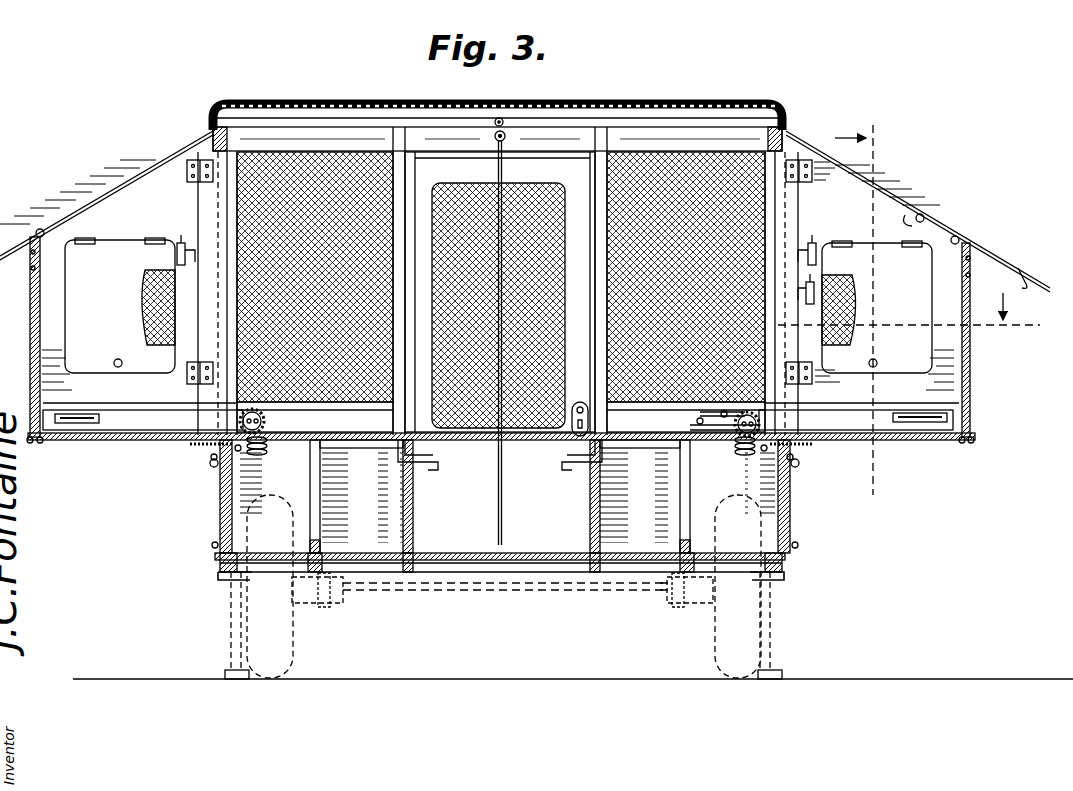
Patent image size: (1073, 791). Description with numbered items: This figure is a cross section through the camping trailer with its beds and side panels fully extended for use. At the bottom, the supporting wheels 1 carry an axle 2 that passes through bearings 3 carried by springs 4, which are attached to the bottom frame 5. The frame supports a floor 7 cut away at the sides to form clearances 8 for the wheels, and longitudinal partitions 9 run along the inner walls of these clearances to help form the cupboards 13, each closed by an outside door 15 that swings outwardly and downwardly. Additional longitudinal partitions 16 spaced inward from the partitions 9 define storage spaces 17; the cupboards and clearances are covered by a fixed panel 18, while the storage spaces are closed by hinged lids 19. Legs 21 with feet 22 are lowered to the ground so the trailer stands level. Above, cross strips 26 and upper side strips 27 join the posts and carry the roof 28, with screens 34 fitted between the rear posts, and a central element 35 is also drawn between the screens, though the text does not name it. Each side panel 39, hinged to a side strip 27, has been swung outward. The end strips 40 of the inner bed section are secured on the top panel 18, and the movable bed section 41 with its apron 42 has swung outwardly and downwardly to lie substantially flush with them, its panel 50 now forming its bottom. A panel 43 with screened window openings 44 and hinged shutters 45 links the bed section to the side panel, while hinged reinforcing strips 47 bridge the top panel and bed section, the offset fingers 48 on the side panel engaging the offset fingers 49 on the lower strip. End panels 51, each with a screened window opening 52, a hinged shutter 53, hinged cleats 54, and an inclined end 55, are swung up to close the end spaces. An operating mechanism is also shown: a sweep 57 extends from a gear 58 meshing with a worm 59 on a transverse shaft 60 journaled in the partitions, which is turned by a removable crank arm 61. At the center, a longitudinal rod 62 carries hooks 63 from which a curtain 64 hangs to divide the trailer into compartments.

The supporting wheels 1 is at (300, 641).
The axle 2 is at (422, 590).
The bearings 3 is at (692, 603).
The springs 4 is at (668, 585).
The bottom frame 5 is at (598, 570).
The floor 7 is at (512, 560).
The clearances 8 is at (858, 312).
The longitudinal partitions 9 is at (312, 504).
The cupboard 13 is at (268, 496).
The outside door 15 is at (220, 513).
The additional longitudinal partitions 16 is at (414, 518).
The storage spaces 17 is at (660, 478).
The panel 18 is at (716, 428).
The hinged lids 19 is at (660, 432).
The legs 21 is at (229, 637).
The feet 22 is at (228, 577).
The cross strips 26 is at (298, 131).
The upper side strips 27 is at (212, 131).
The roof 28 is at (665, 108).
The screens 34 is at (245, 224).
The door 35 is at (548, 432).
The side panel 39 is at (525, 211).
The end strips of bed section 40 is at (501, 417).
The movable bed section 41 is at (138, 410).
The apron 42 is at (42, 372).
The panel 43 is at (30, 356).
The screened window openings 44 is at (30, 318).
The hinged shutters 45 is at (962, 312).
The reinforcing strips 47 is at (206, 462).
The offset fingers 48 is at (1024, 287).
The offset fingers 49 is at (200, 447).
The panel 50 is at (125, 435).
The end panels 51 is at (884, 202).
The screened window opening 52 is at (816, 295).
The hinged shutter 53 is at (845, 252).
The cleats 54 is at (806, 194).
The inclined end 55 is at (926, 222).
The sweep 57 is at (150, 440).
The gear 58 is at (268, 420).
The worm 59 is at (262, 455).
The transverse shaft 60 is at (360, 449).
The removable crank arm 61 is at (438, 466).
The longitudinal rod 62 is at (505, 118).
The hooks 63 is at (494, 137).
The curtain 64 is at (522, 158).